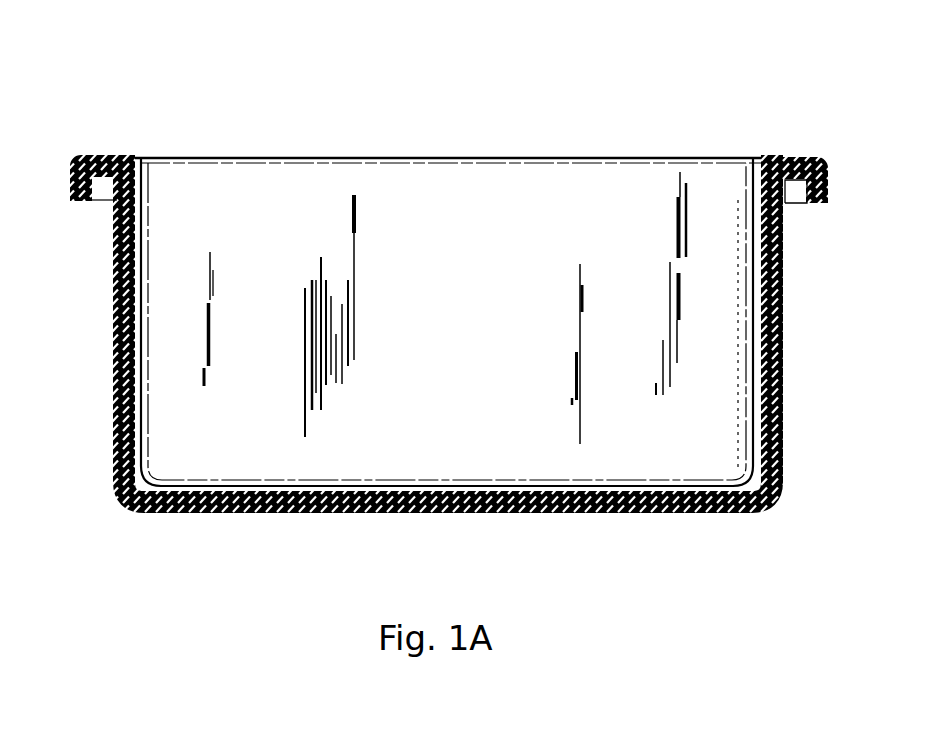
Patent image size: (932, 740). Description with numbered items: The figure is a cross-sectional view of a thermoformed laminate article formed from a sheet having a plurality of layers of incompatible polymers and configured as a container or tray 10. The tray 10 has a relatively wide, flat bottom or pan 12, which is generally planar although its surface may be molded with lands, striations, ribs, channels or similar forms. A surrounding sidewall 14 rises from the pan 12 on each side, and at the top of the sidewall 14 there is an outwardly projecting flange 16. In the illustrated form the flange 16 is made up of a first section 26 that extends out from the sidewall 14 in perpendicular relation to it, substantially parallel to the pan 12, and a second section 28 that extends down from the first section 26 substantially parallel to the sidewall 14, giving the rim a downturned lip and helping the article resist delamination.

The container or tray 10 is at (664, 138).
The bottom or pan 12 is at (262, 516).
The sidewall 14 is at (792, 318).
The outwardly projecting flange 16 is at (96, 150).
The first section 26 is at (811, 158).
The second section 28 is at (828, 187).